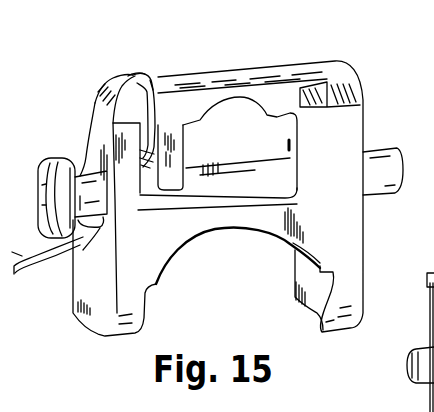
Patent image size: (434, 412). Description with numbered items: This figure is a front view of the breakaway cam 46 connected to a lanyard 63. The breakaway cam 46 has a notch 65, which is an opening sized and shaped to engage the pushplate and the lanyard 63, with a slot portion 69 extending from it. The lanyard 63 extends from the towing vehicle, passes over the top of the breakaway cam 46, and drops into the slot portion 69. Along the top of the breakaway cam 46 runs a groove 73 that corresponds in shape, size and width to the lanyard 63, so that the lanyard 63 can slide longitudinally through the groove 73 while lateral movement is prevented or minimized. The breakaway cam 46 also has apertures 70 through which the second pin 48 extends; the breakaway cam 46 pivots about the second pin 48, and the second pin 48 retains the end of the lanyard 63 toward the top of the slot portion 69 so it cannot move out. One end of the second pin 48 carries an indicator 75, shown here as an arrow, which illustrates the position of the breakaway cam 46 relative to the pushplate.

The breakaway cam 46 is at (333, 240).
The second pin 48 is at (385, 176).
The lanyard 63 is at (128, 72).
The notch 65 is at (247, 143).
The slot portion 69 is at (157, 117).
The apertures 70 is at (103, 218).
The groove 73 is at (152, 81).
The indicator 75 is at (47, 163).